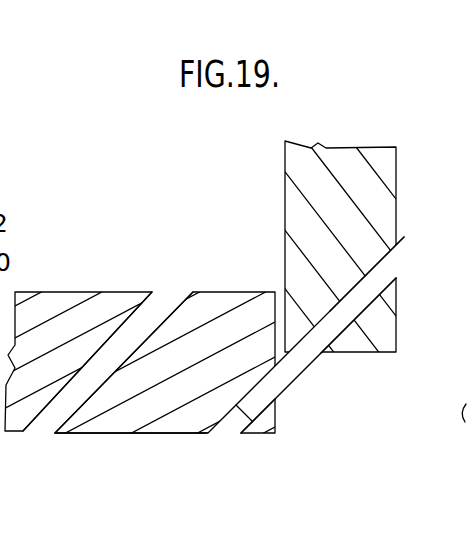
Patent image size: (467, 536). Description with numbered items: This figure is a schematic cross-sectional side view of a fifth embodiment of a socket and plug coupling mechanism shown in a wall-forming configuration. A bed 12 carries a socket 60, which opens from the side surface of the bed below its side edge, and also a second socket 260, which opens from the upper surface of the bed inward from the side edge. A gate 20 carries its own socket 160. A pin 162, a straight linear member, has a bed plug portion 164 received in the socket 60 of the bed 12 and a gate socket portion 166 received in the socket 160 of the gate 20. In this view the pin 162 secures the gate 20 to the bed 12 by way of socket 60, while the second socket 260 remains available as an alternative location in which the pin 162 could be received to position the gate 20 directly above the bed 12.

The bed 12 is at (92, 291).
The gate 20 is at (381, 178).
The socket 60 is at (232, 426).
The socket 160 is at (394, 268).
The pin 162 is at (305, 364).
The bed plug portion 164 is at (276, 401).
The gate socket portion 166 is at (356, 308).
The second socket 260 is at (41, 418).